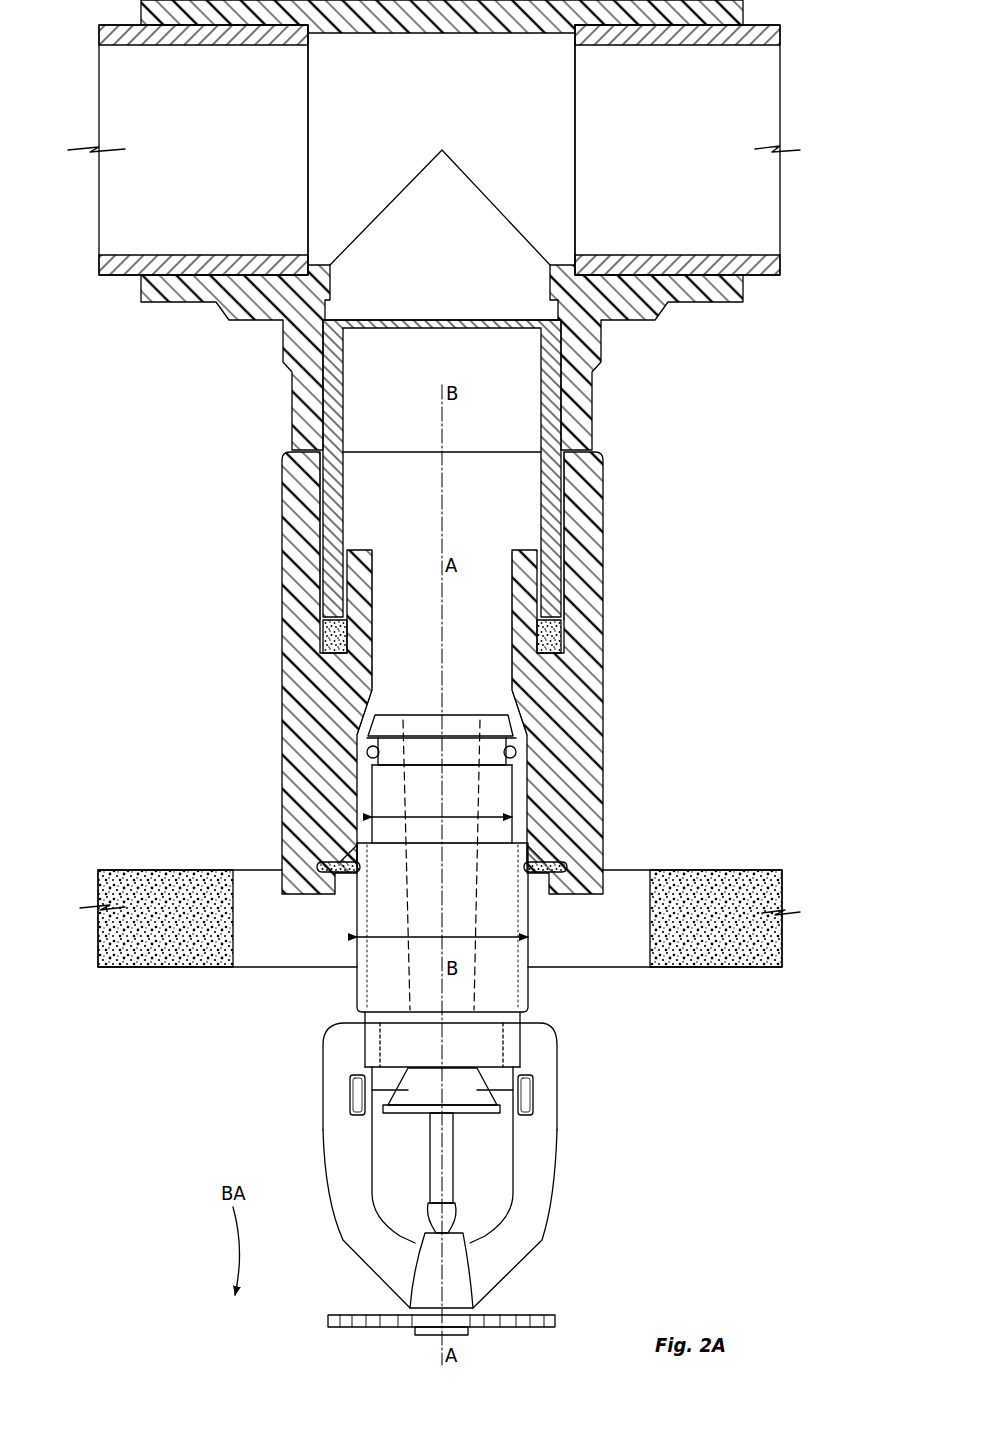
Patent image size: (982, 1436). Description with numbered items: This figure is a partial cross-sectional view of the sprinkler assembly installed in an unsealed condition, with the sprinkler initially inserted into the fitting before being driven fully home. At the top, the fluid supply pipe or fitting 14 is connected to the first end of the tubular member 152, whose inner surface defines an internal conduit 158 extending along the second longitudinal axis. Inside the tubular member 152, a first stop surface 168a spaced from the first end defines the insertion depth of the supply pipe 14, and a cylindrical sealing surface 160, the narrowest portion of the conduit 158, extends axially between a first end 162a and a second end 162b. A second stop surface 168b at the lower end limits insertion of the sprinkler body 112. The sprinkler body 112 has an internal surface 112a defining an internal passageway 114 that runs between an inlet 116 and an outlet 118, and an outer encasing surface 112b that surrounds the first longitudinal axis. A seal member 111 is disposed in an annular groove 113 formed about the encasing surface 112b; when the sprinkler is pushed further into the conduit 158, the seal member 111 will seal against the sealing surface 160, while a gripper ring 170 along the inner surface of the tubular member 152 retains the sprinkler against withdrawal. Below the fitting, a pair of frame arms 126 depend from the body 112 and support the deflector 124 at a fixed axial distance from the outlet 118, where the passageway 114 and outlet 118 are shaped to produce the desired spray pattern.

The fluid supply pipe or fitting 14 is at (292, 407).
The internal conduit 158 is at (500, 620).
The tubular member 152 is at (300, 770).
The first stop surface 168a is at (323, 643).
The second stop surface 168b is at (352, 707).
The first end of sealing surface 162a is at (548, 640).
The second end of sealing surface 162b is at (519, 705).
The sealing surface 160 is at (513, 678).
The inlet 116 is at (418, 722).
The seal member 111 is at (516, 752).
The annular groove / shoulder surface 113 is at (497, 757).
The internal surface 112a is at (446, 779).
The outer encasing surface 112b is at (528, 980).
The sprinkler body 112 is at (446, 829).
The internal passageway 114 is at (441, 865).
The gripper ring 170 is at (340, 862).
The outlet 118 is at (460, 1087).
The frame arms 126 is at (335, 1172).
The deflector 124 is at (503, 1308).